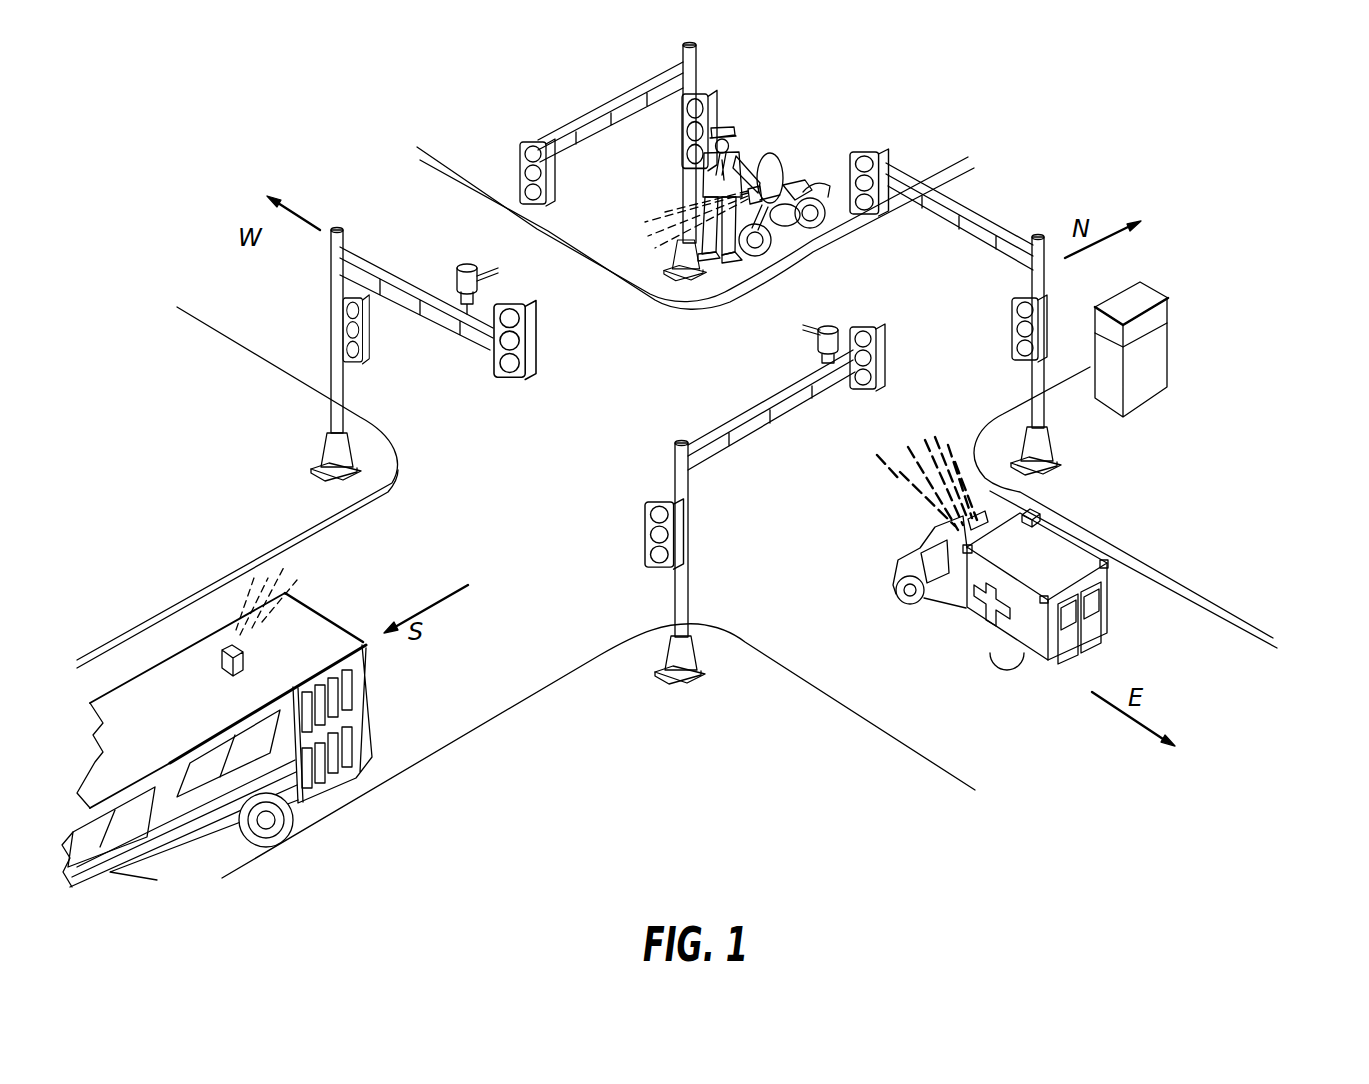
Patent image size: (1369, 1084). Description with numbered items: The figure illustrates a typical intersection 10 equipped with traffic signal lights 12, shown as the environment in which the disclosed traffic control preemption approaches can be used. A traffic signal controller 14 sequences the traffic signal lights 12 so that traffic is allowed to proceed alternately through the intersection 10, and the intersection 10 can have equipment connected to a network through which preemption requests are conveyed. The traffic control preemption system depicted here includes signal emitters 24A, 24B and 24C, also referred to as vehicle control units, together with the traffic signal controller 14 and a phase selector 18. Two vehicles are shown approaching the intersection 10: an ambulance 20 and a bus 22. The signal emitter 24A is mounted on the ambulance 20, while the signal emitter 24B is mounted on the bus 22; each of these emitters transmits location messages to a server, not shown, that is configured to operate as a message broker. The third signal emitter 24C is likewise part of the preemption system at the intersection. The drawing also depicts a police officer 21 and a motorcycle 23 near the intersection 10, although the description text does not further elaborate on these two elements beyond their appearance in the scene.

The intersection 10 is at (1262, 563).
The traffic signal lights 12 is at (680, 148).
The traffic signal controller 14 is at (1158, 349).
The phase selector 18 is at (1148, 297).
The ambulance 20 is at (980, 628).
The police officer 21 is at (724, 126).
The bus 22 is at (191, 837).
The motorcycle 23 is at (822, 186).
The signal emitter 24A is at (1040, 511).
The signal emitter 24B is at (227, 647).
The signal emitter 24C is at (754, 186).